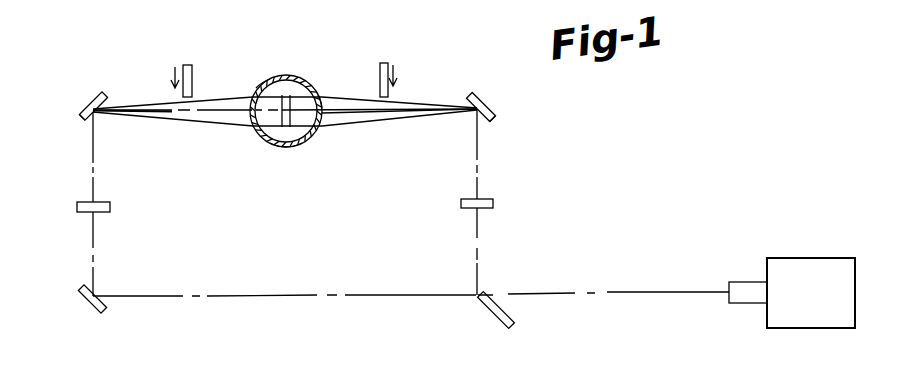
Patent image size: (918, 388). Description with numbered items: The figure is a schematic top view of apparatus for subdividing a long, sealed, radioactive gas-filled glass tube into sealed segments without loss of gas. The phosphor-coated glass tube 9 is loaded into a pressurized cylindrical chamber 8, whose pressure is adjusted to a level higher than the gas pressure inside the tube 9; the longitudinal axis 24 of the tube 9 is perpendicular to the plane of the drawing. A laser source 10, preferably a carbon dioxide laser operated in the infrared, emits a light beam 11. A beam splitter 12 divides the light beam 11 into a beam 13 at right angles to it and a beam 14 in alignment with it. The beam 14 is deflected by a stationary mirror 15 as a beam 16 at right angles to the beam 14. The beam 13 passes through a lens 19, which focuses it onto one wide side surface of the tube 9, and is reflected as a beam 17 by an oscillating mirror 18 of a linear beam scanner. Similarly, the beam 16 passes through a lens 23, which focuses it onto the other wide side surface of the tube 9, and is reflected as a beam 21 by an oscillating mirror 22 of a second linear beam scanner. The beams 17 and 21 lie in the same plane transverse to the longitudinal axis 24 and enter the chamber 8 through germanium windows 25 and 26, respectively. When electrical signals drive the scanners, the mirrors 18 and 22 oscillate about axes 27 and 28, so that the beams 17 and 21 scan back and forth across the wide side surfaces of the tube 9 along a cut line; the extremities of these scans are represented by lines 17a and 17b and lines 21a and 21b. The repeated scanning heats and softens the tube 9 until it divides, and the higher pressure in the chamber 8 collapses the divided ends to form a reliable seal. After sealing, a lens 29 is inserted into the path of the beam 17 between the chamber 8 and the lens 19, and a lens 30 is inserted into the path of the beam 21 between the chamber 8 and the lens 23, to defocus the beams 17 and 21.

The pressurized cylindrical chamber 8 is at (278, 77).
The glass tube 9 is at (281, 146).
The laser source 10 is at (797, 232).
The light beam 11 is at (567, 294).
The beam splitter 12 is at (497, 320).
The beam 13 is at (478, 222).
The beam 14 is at (372, 296).
The stationary mirror 15 is at (90, 312).
The beam 16 is at (95, 223).
The beam 17 is at (408, 113).
The line 17a is at (397, 102).
The line 17b is at (372, 120).
The oscillating mirror 18 is at (481, 95).
The lens 19 is at (495, 200).
The beam 21 is at (157, 113).
The line 21a is at (233, 100).
The line 21b is at (197, 123).
The oscillating mirror 22 is at (100, 90).
The lens 23 is at (112, 203).
The longitudinal axis 24 is at (290, 97).
The window 25 is at (320, 100).
The window 26 is at (255, 88).
The axis 27 is at (490, 107).
The axis 28 is at (80, 110).
The lens 29 is at (387, 63).
The lens 30 is at (197, 50).